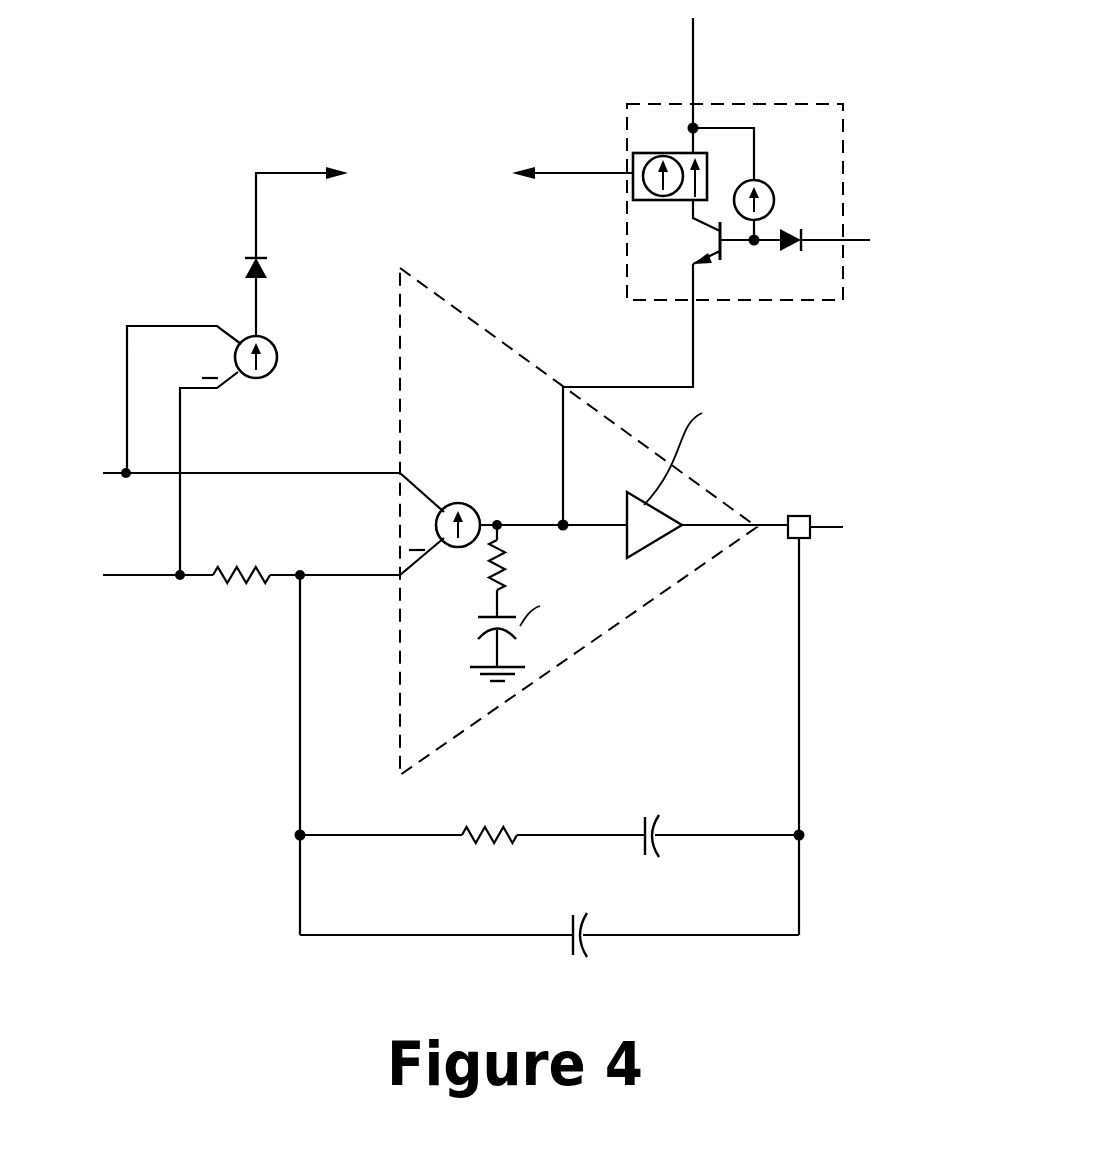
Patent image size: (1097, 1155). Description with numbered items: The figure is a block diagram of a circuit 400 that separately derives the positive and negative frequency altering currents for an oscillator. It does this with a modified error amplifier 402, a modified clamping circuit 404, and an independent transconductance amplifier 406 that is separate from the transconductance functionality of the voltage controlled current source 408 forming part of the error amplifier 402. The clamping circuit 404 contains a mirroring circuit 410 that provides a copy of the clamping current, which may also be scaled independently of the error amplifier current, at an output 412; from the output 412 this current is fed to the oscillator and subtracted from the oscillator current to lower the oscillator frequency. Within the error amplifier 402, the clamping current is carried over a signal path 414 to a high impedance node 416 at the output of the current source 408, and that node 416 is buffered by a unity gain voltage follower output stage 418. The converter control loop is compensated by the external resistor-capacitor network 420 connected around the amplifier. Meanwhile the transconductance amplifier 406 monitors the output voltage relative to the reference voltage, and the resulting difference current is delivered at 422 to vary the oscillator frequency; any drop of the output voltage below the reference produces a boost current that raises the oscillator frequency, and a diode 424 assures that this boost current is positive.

The circuit 400 is at (943, 643).
The error amplifier 402 is at (719, 495).
The clamping circuit 404 is at (791, 174).
The transconductance amplifier 406 is at (265, 380).
The voltage controlled current source 408 is at (458, 502).
The mirroring circuit 410 is at (655, 152).
The output 412 is at (585, 178).
The signal path 414 is at (693, 360).
The high impedance node 416 is at (560, 520).
The voltage follower output stage 418 is at (656, 547).
The external resistor-capacitor network 420 is at (578, 790).
The difference current output 422 is at (257, 171).
The diode 424 is at (247, 266).